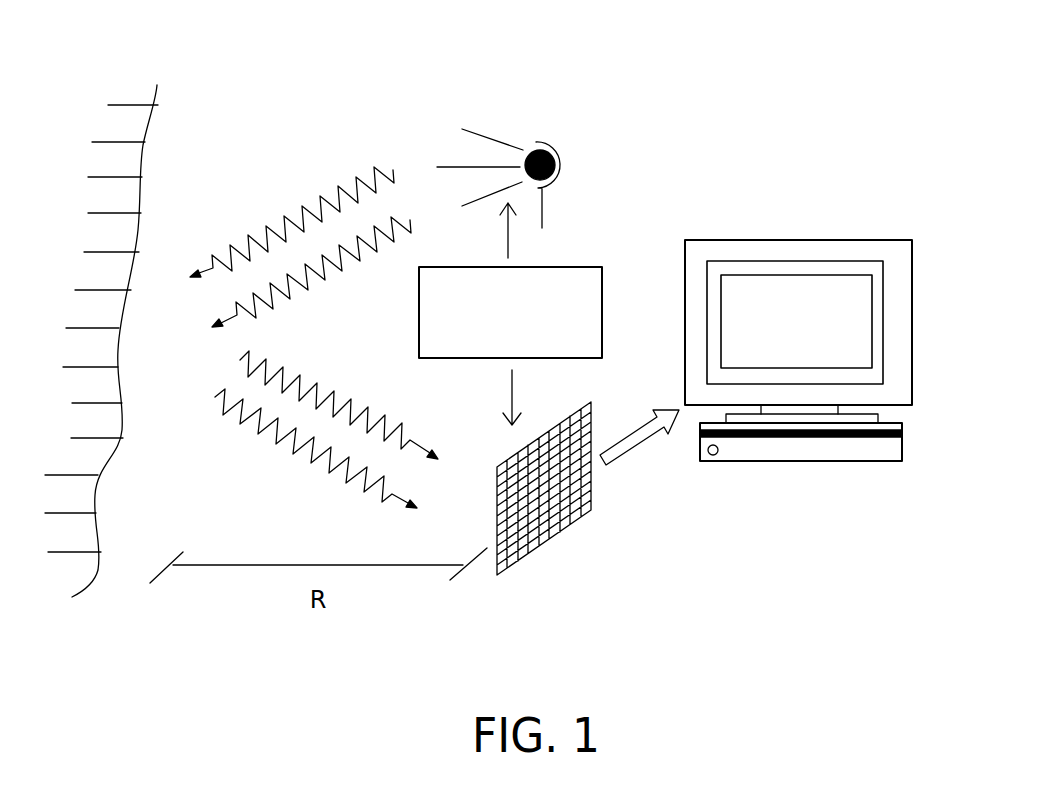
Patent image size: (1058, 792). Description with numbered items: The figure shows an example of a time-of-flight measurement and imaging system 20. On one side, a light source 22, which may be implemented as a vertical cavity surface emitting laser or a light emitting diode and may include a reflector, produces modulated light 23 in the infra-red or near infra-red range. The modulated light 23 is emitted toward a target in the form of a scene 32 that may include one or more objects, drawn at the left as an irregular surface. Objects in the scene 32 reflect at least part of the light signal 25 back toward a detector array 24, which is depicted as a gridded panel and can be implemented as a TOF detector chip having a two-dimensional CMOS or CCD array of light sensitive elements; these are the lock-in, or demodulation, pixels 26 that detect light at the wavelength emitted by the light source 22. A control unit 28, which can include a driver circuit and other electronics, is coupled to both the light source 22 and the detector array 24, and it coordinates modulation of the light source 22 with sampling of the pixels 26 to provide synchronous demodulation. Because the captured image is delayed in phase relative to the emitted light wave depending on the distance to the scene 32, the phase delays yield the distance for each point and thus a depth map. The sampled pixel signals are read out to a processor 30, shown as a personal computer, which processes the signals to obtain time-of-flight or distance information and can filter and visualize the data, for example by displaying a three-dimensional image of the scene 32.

The TOF measurement and/or imaging system 20 is at (827, 172).
The light source 22 is at (530, 150).
The modulated light 23 is at (310, 190).
The detector array 24 is at (508, 563).
The light signal 25 is at (307, 463).
The lock-in pixels 26 is at (547, 540).
The control unit 28 is at (573, 277).
The processor 30 is at (913, 300).
The scene 32 is at (140, 197).